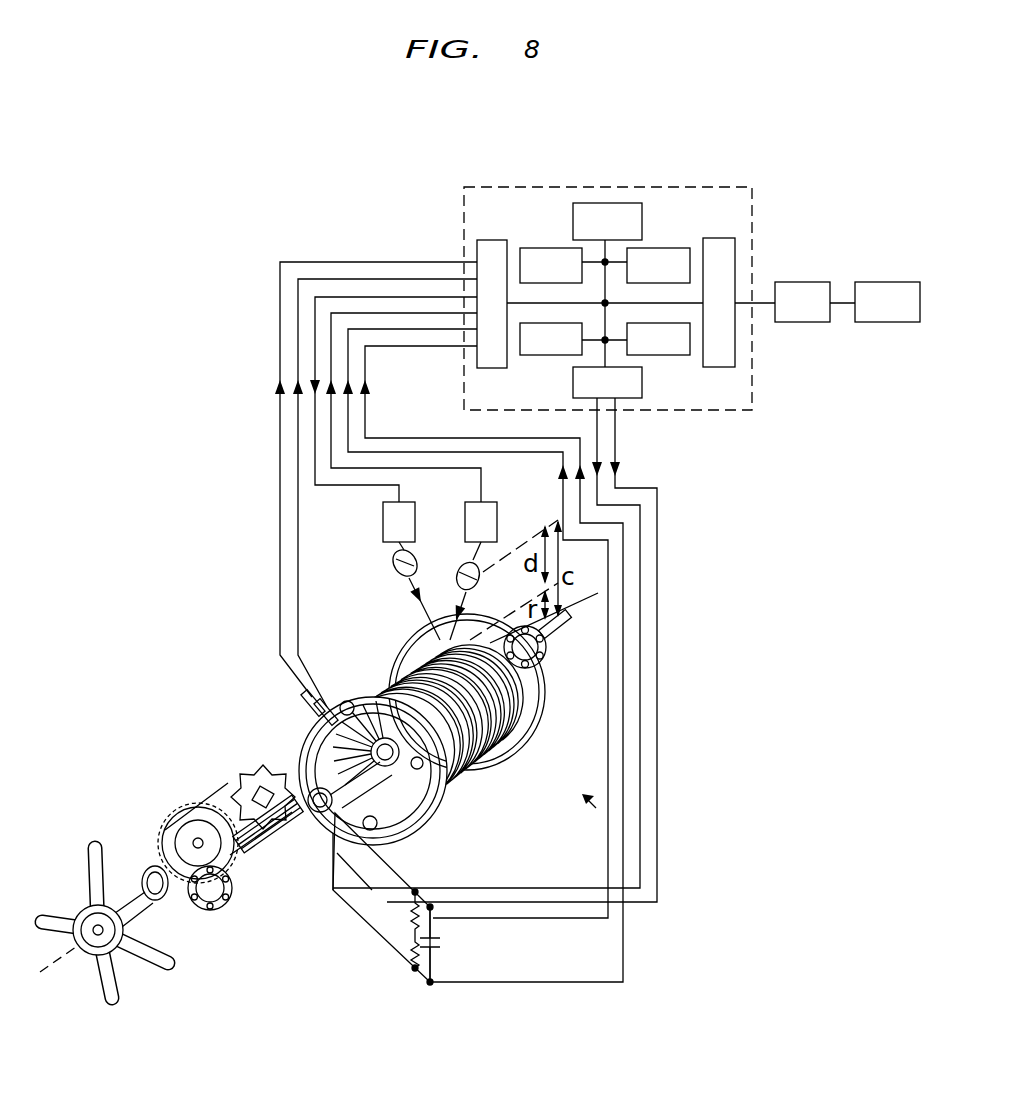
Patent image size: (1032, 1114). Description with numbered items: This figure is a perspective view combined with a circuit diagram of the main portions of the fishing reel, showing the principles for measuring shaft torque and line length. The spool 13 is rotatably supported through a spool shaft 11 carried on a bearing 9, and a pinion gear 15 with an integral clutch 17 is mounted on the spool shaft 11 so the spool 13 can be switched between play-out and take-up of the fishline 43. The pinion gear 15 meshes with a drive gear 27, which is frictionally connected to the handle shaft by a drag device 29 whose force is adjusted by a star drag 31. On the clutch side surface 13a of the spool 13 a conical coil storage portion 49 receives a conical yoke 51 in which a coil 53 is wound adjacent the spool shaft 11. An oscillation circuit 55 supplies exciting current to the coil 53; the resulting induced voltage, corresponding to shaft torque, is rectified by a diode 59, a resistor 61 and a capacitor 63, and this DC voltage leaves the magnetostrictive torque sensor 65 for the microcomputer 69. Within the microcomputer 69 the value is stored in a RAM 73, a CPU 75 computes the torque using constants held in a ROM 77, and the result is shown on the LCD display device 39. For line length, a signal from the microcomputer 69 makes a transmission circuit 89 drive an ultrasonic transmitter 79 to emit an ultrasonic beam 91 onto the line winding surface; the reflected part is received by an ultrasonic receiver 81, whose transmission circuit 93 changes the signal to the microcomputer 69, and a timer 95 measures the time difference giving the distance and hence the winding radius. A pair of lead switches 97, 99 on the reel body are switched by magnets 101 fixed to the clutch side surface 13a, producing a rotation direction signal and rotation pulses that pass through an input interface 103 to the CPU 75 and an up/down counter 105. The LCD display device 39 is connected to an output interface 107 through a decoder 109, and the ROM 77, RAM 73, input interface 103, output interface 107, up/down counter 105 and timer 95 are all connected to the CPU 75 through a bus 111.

The bearing 9 is at (318, 768).
The spool shaft 11 is at (570, 620).
The spool 13 is at (522, 712).
The clutch side surface 13a is at (425, 822).
The pinion gear 15 is at (260, 887).
The clutch 17 is at (300, 860).
The drive gear 27 is at (205, 805).
The drag device 29 is at (142, 850).
The star drag 31 is at (118, 998).
The LCD display device 39 is at (870, 282).
The fishline 43 is at (540, 775).
The coil storage portion 49 is at (414, 803).
The yoke 51 is at (327, 755).
The coil 53 is at (322, 812).
The oscillation circuit 55 is at (640, 398).
The diode 59 is at (402, 868).
The resistor 61 is at (413, 970).
The capacitor 63 is at (441, 942).
The magnetostrictive torque sensor 65 is at (357, 932).
The microcomputer 69 is at (657, 172).
The RAM 73 is at (752, 205).
The CPU 75 is at (605, 203).
The ROM 77 is at (535, 248).
The ultrasonic transmitter 79 is at (394, 565).
The ultrasonic receiver 81 is at (458, 565).
The transmission circuit 89 is at (383, 512).
The ultrasonic beam 91 is at (422, 632).
The transmission circuit 93 is at (497, 512).
The timer 95 is at (535, 355).
The lead switch 97 is at (312, 688).
The lead switch 99 is at (305, 700).
The magnets 101 is at (347, 700).
The input interface 103 is at (475, 243).
The up/down counter 105 is at (682, 355).
The output interface 107 is at (738, 347).
The decoder 109 is at (815, 322).
The bus 111 is at (612, 268).